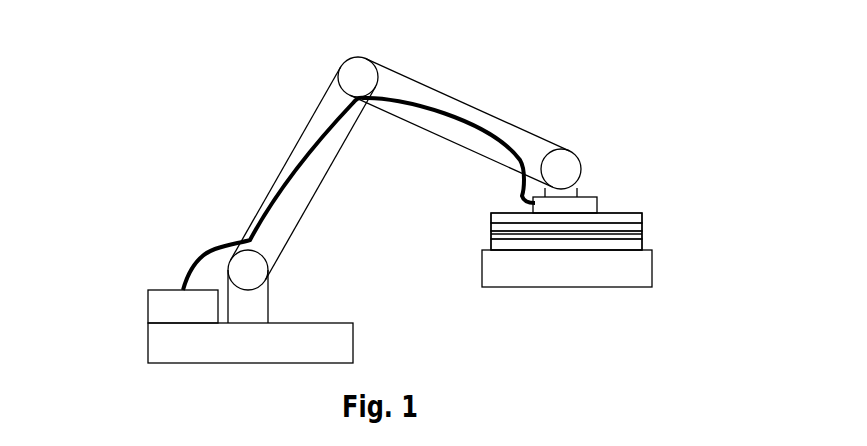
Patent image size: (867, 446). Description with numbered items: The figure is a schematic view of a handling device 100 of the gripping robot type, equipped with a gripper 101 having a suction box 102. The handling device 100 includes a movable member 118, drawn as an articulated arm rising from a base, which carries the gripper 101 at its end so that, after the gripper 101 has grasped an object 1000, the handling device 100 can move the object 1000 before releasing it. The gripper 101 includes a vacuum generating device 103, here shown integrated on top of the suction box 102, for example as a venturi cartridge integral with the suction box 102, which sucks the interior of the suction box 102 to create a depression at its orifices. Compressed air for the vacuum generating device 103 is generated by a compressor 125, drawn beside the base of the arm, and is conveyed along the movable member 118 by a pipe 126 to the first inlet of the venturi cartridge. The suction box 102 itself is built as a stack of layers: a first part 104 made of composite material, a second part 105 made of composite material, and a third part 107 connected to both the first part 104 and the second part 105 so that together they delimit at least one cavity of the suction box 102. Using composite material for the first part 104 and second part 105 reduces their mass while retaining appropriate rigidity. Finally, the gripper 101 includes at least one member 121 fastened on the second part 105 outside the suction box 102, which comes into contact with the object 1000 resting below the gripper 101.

The handling device 100 is at (240, 112).
The movable member 118 is at (436, 80).
The pipe 126 is at (197, 260).
The compressor 125 is at (148, 310).
The vacuum generating device 103 is at (588, 197).
The gripper 101 is at (618, 192).
The first part 104 is at (628, 212).
The third part 107 is at (492, 227).
The suction box 102 is at (656, 227).
The second part 105 is at (535, 237).
The member 121 is at (492, 240).
The object 1000 is at (645, 262).